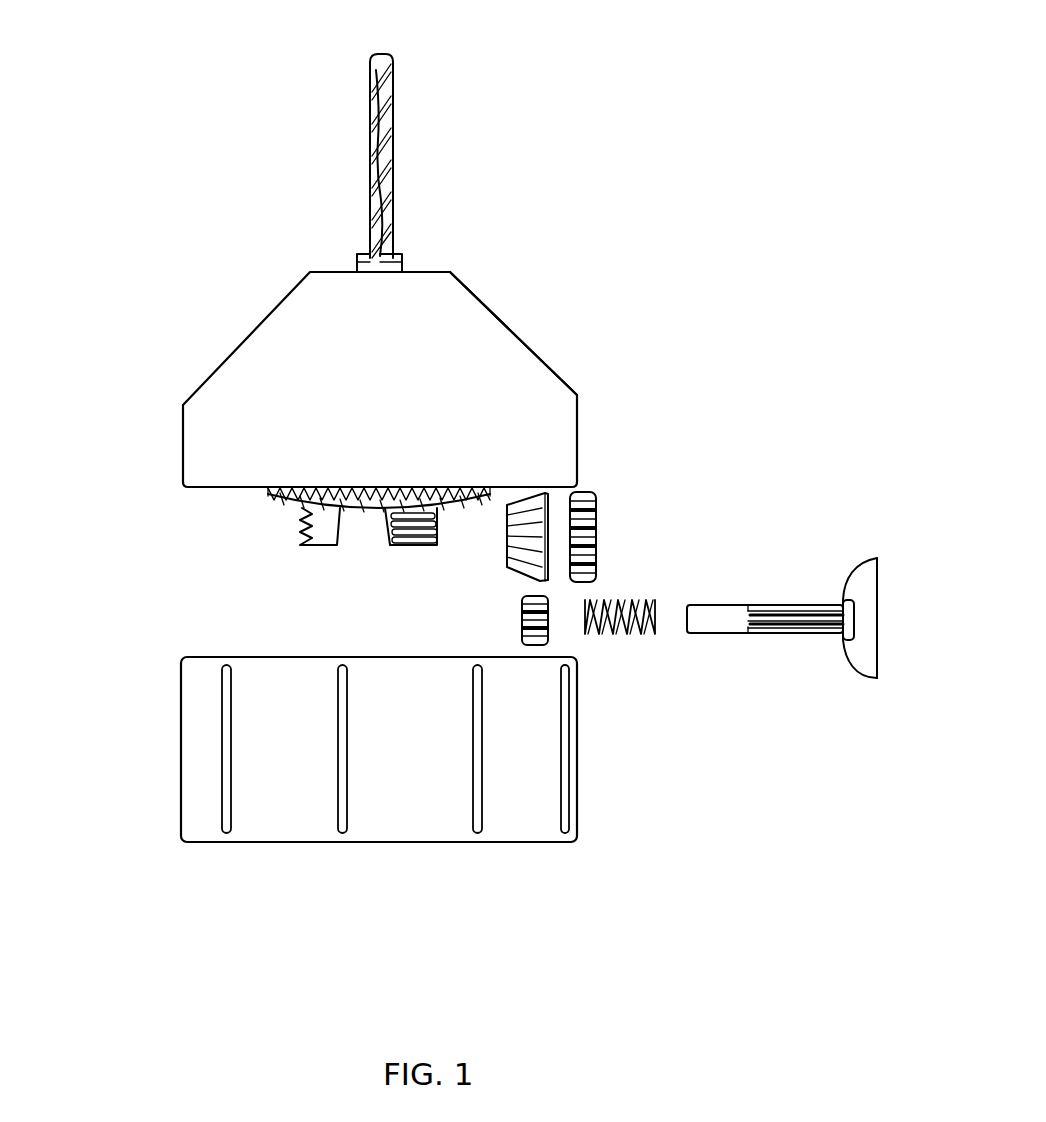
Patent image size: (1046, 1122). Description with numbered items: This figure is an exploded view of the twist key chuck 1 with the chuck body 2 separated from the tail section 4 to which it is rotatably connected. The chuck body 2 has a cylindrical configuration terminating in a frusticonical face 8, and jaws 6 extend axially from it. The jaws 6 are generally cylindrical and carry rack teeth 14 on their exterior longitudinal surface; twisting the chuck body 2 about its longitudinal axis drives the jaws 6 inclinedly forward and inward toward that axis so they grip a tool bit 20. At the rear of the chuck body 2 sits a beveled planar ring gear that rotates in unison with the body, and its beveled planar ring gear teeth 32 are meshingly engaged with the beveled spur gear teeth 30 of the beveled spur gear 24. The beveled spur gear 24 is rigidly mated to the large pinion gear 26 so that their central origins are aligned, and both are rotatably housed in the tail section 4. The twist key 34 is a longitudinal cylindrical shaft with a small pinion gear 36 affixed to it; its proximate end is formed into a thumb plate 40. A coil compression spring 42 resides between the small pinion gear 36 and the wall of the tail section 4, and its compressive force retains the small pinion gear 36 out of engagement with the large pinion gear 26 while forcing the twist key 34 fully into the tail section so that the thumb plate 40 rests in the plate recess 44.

The twist key chuck 1 is at (541, 157).
The chuck body 2 is at (578, 433).
The tail section 4 is at (183, 658).
The jaws 6 is at (398, 256).
The frusticonical face 8 is at (515, 328).
The rack teeth 14 is at (305, 525).
The tool bit 20 is at (392, 72).
The beveled spur gear 24 is at (545, 497).
The large pinion gear 26 is at (597, 540).
The beveled spur gear teeth 30 is at (518, 572).
The beveled planar ring gear teeth 32 is at (467, 503).
The twist key 34 is at (738, 635).
The small pinion gear 36 is at (568, 755).
The thumb plate 40 is at (873, 680).
The coil compression spring 42 is at (650, 637).
The plate recess 44 is at (548, 633).